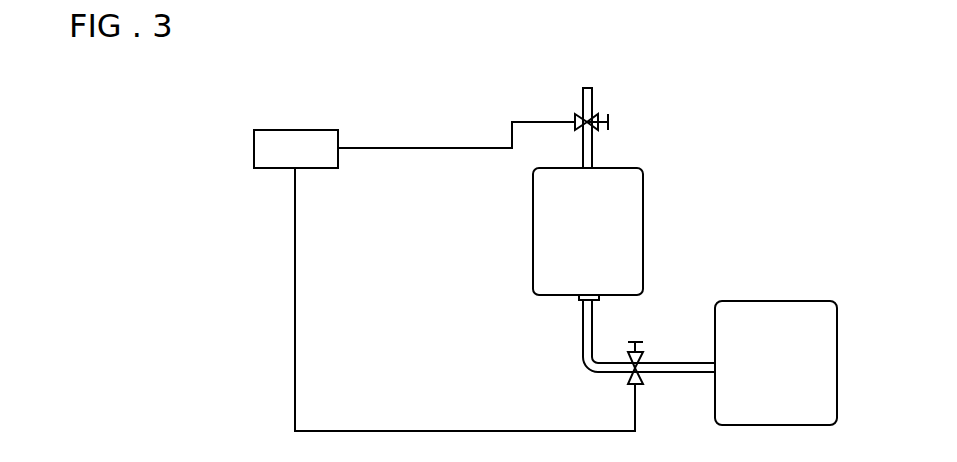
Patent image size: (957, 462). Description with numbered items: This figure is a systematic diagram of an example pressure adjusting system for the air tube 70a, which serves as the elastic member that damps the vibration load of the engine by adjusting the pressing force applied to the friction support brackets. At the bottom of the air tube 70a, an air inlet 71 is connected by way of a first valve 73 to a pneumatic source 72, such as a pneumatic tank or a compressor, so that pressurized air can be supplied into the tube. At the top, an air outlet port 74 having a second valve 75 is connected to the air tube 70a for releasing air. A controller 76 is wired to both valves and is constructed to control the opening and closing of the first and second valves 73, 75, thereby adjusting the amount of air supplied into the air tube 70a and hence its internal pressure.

The air tube 70a is at (643, 218).
The air inlet 71 is at (582, 297).
The pneumatic source 72 is at (838, 337).
The first valve 73 is at (642, 352).
The air outlet port 74 is at (593, 97).
The second valve 75 is at (575, 118).
The controller 76 is at (307, 130).